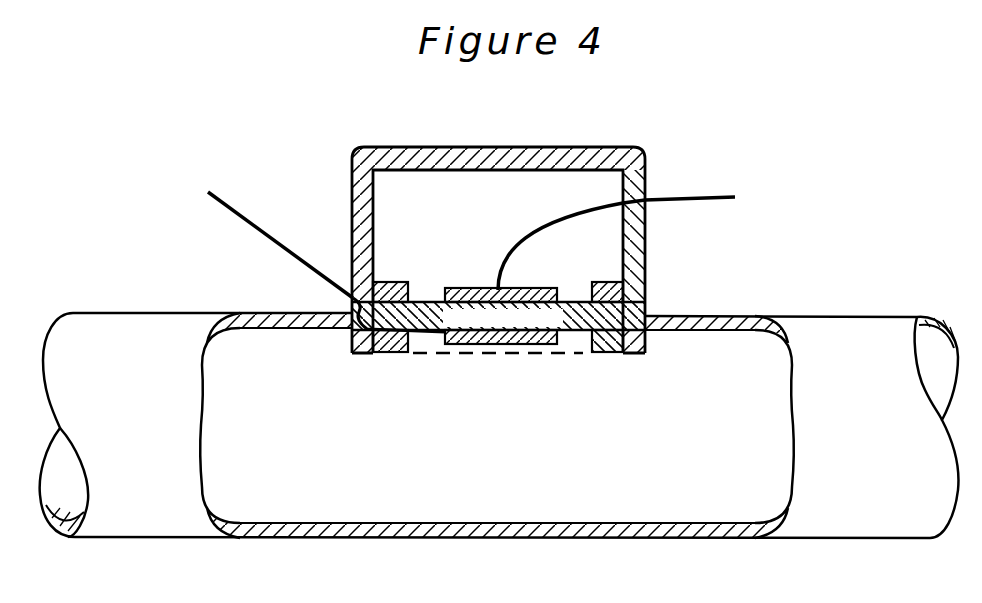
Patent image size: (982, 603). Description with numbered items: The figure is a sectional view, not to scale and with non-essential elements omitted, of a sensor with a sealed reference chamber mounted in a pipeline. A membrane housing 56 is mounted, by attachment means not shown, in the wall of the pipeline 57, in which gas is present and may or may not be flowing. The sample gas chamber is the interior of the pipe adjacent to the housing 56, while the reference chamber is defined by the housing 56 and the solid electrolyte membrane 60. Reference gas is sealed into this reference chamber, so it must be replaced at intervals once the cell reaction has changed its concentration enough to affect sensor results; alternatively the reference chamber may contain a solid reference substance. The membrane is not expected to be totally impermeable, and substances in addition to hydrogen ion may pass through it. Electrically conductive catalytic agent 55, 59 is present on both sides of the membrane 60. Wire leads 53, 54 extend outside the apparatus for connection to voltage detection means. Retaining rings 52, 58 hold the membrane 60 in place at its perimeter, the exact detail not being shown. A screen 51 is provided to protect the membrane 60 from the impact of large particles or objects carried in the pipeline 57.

The screen 51 is at (478, 357).
The retaining ring 52 is at (383, 281).
The wire lead 53 is at (518, 229).
The wire lead 54 is at (252, 231).
The electrically conductive catalytic agent 55 is at (486, 287).
The membrane housing 56 is at (493, 147).
The pipeline 57 is at (268, 330).
The retaining ring 58 is at (384, 355).
The electrically conductive catalytic agent 59 is at (542, 345).
The solid electrolyte membrane 60 is at (572, 300).